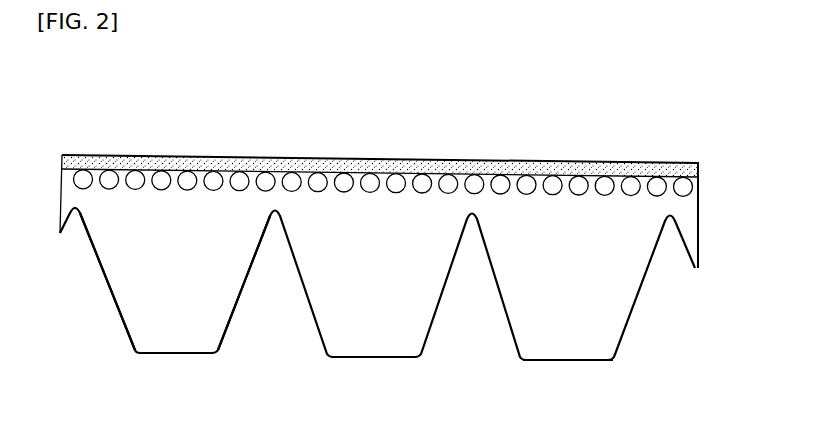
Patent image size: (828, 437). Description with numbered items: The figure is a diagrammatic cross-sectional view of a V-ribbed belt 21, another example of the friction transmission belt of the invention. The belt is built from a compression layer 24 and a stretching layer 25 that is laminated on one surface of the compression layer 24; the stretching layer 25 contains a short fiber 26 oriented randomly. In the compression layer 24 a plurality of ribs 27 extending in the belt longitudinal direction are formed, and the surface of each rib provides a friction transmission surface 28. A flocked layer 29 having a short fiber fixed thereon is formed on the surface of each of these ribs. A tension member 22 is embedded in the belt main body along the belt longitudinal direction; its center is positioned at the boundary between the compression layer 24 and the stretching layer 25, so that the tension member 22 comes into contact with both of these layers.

The V-ribbed belt 21 is at (306, 131).
The tension member 22 is at (672, 177).
The compression layer 24 is at (404, 314).
The stretching layer 25 is at (409, 144).
The short fiber 26 is at (477, 162).
The rib 27 is at (567, 340).
The friction transmission surface 28 is at (240, 303).
The flocked layer 29 is at (83, 247).